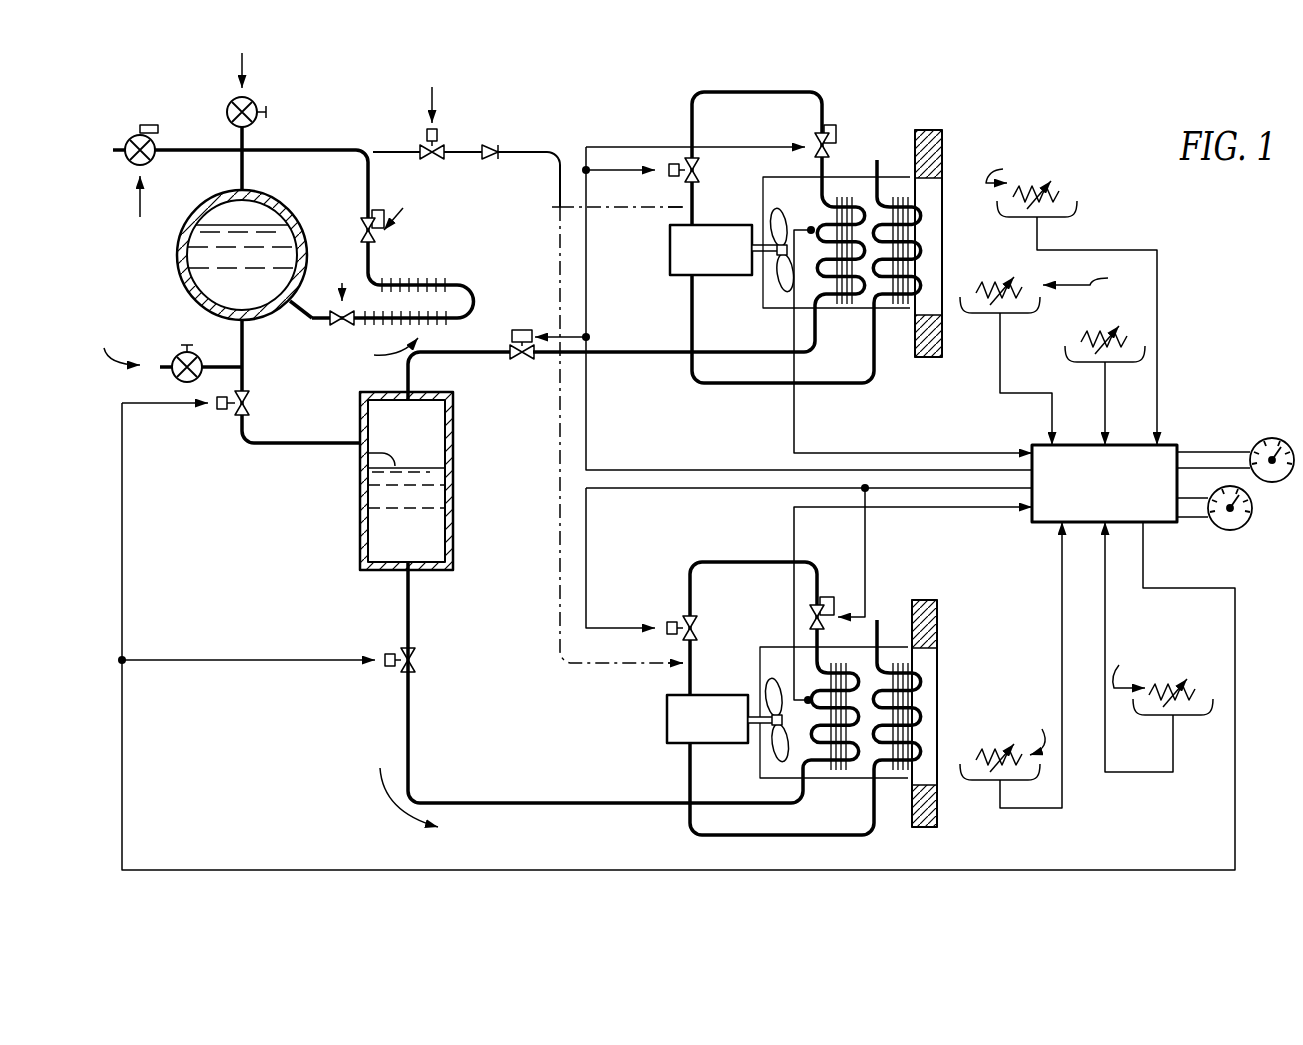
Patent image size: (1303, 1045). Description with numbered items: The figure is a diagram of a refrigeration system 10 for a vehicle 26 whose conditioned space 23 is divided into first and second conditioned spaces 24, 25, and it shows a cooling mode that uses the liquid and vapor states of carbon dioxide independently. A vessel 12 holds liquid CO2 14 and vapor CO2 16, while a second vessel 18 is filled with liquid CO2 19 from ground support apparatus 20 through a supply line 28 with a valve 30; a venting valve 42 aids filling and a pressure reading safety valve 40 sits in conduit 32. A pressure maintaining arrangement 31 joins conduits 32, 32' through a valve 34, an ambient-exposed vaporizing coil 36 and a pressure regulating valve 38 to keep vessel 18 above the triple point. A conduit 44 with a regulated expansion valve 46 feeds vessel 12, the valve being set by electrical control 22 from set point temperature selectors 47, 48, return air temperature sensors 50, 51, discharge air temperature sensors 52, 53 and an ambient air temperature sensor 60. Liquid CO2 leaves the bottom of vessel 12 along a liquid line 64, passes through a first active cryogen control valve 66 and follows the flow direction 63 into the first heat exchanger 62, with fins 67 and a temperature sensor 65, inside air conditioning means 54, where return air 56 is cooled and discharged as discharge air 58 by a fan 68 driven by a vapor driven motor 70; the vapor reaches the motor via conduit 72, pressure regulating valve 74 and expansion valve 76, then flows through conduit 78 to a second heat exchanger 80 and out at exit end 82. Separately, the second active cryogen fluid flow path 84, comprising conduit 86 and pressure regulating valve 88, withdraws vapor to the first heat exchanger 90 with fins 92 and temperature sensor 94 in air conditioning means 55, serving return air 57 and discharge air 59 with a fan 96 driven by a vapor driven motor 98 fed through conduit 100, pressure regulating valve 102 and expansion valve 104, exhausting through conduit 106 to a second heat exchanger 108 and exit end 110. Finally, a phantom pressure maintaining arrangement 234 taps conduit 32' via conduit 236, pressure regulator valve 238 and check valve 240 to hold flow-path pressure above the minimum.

The refrigeration system 10 is at (612, 105).
The vessel 12 is at (453, 462).
The liquid CO2 14 is at (370, 456).
The vapor CO2 16 is at (372, 420).
The second vessel 18 is at (182, 222).
The liquid CO2 in vessel 18 19 is at (262, 225).
The ground support apparatus 20 is at (108, 345).
The electrical control 22 is at (1045, 523).
The conditioned space 23 is at (980, 442).
The first conditioned space 24 is at (977, 704).
The second conditioned space 25 is at (957, 259).
The vehicle 26 is at (942, 152).
The supply line 28 is at (172, 365).
The valve 30 is at (203, 362).
The pressure maintaining arrangement 31 is at (410, 267).
The conduit 32 is at (293, 327).
The conduit 32' is at (285, 197).
The valve 34 is at (336, 312).
The vaporizing coil 36 is at (462, 288).
The pressure regulating valve 38 is at (362, 232).
The pressure reading safety valve 40 is at (140, 132).
The venting valve 42 is at (232, 105).
The conduit 44 is at (249, 402).
The regulated expansion valve 46 is at (222, 410).
The set point temperature selector 47 is at (1262, 442).
The set point temperature selector 48 is at (1242, 531).
The return air temperature sensor 50 is at (998, 787).
The return air temperature sensor 51 is at (1005, 315).
The discharge air temperature sensor 52 is at (1160, 683).
The discharge air temperature sensor 53 is at (1062, 187).
The air conditioning means 54 is at (768, 647).
The air conditioning means 55 is at (768, 177).
The return air 56 is at (1040, 730).
The return air 57 is at (1087, 270).
The discharge air 58 is at (1127, 664).
The discharge air 59 is at (1004, 164).
The ambient air temperature sensor 60 is at (1100, 342).
The first heat exchanger 62 is at (818, 770).
The flow direction 63 is at (386, 810).
The liquid line 64 is at (412, 712).
The temperature sensor 65 is at (908, 626).
The first active cryogen control valve 66 is at (414, 662).
The fins 67 is at (838, 663).
The fan 68 is at (772, 682).
The vapor driven motor 70 is at (667, 724).
The conduit 72 is at (814, 562).
The pressure regulating valve 74 is at (828, 603).
The expansion valve 76 is at (694, 624).
The conduit 78 is at (690, 777).
The second heat exchanger 80 is at (872, 778).
The exit end 82 is at (877, 614).
The second active cryogen fluid flow path 84 is at (427, 369).
The conduit 86 is at (662, 353).
The pressure regulating valve 88 is at (512, 330).
The first heat exchanger 90 is at (810, 310).
The fins 92 is at (838, 197).
The temperature sensor 94 is at (810, 227).
The fan 96 is at (772, 282).
The vapor driven motor 98 is at (670, 264).
The conduit 100 is at (823, 96).
The pressure regulating valve 102 is at (815, 140).
The expansion valve 104 is at (700, 178).
The conduit 106 is at (775, 384).
The second heat exchanger 108 is at (918, 214).
The exit end 110 is at (877, 162).
The pressure maintaining arrangement 234 is at (445, 107).
The conduit 236 is at (548, 150).
The pressure regulator valve 238 is at (432, 158).
The check valve 240 is at (490, 160).